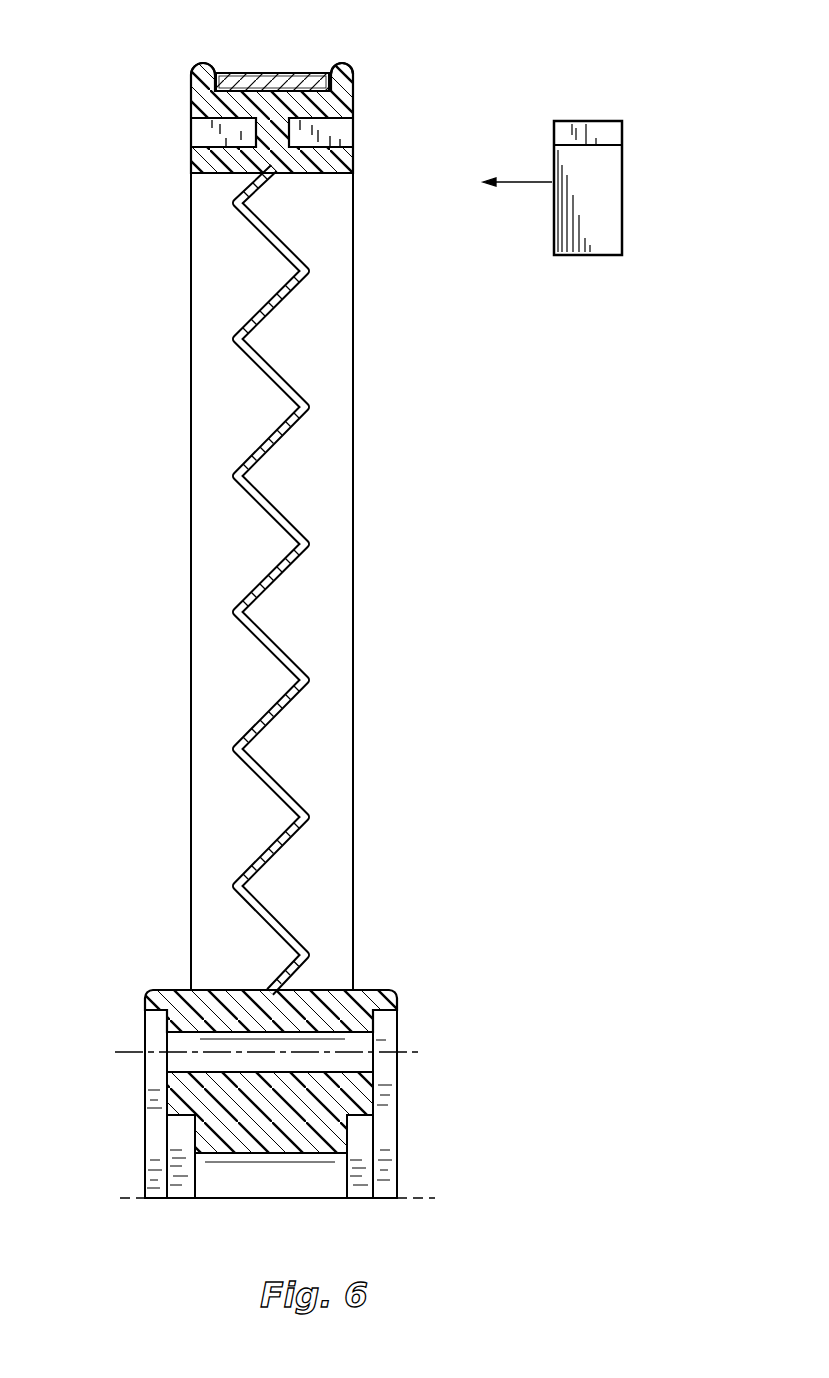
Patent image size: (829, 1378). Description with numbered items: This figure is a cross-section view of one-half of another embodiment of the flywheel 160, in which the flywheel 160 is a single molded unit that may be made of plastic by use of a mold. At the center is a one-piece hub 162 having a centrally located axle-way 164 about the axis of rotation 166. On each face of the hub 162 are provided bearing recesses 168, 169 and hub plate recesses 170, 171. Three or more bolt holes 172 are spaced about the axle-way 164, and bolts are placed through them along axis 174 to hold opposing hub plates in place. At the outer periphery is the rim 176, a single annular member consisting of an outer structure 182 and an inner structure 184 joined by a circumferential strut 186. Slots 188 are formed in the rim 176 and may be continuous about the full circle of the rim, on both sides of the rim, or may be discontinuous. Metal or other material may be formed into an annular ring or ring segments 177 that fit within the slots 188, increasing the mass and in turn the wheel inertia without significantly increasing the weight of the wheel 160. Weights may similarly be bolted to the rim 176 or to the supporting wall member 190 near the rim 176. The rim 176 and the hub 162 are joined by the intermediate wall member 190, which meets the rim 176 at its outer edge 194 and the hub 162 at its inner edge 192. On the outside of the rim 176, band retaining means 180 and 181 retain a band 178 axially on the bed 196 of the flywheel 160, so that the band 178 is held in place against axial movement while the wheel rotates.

The flywheel 160 is at (153, 510).
The hub 162 is at (432, 993).
The axle-way 164 is at (310, 1183).
The axis of rotation 166 is at (137, 1200).
The bearing recess 168 is at (352, 1162).
The bearing recess 169 is at (162, 1182).
The hub plate recess 170 is at (397, 1086).
The hub plate recess 171 is at (155, 1131).
The bolt holes 172 is at (152, 1036).
The axis 174 is at (132, 1055).
The rim 176 is at (328, 217).
The ring segments 177 is at (622, 198).
The band 178 is at (312, 76).
The band retaining means 180 is at (348, 73).
The band retaining means 181 is at (205, 72).
The outer structure 182 is at (338, 108).
The inner structure 184 is at (198, 165).
The circumferential strut 186 is at (212, 128).
The slots 188 is at (345, 131).
The wall member 190 is at (310, 682).
The inner edge 192 is at (270, 988).
The outer edge 194 is at (250, 180).
The bed 196 is at (252, 82).